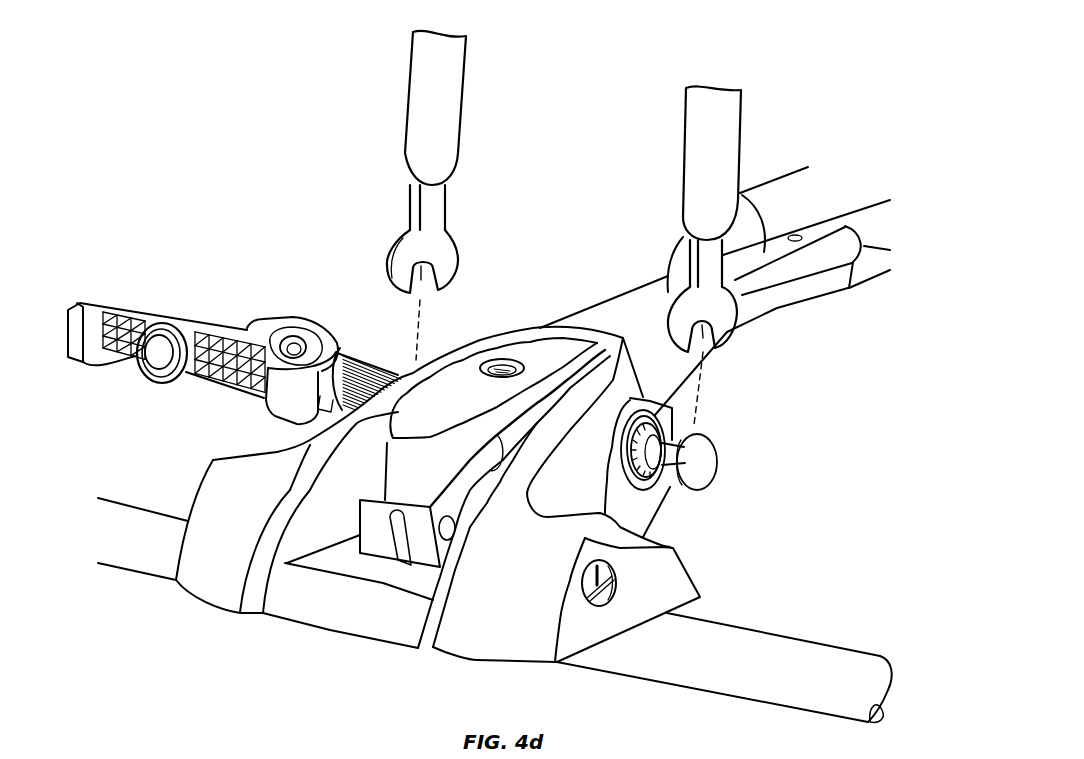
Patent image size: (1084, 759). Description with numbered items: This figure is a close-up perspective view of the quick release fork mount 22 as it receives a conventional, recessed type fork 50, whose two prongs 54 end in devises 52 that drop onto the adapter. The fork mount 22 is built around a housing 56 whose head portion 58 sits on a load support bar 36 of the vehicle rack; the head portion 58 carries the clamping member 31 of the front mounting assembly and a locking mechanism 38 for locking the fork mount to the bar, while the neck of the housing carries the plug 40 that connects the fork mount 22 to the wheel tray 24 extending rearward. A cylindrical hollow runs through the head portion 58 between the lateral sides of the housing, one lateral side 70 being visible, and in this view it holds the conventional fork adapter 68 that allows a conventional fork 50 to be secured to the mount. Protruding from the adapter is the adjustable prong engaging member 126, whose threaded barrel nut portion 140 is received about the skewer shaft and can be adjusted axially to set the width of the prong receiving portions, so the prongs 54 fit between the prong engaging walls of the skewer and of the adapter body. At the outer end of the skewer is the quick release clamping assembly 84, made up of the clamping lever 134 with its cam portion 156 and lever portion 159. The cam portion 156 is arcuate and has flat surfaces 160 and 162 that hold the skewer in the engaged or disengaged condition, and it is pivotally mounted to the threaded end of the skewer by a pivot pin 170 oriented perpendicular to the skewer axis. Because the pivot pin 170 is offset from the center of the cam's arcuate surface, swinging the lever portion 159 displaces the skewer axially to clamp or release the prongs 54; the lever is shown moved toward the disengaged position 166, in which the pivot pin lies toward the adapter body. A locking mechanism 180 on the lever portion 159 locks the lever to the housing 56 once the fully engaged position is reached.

The fork mount 22 is at (358, 270).
The wheel tray 24 is at (806, 174).
The clamping member 31 is at (419, 419).
The load support bar 36 is at (771, 646).
The locking mechanism 38 is at (488, 356).
The plug 40 is at (626, 301).
The conventional fork 50 is at (758, 106).
The devise 52 is at (709, 329).
The prong 54 is at (417, 106).
The housing 56 is at (207, 488).
The head portion 58 is at (267, 636).
The conventional fork adapter 68 is at (761, 462).
The lateral side 70 is at (646, 508).
The quick release clamping assembly 84 is at (165, 289).
The adjustable prong engaging member 126 is at (377, 361).
The clamping lever 134 is at (220, 326).
The threaded barrel nut portion 140 is at (356, 341).
The cam portion 156 is at (360, 304).
The lever portion 159 is at (74, 290).
The flat surface 160 is at (277, 406).
The flat surface 162 is at (299, 323).
The disengaged position 166 is at (776, 408).
The pivot pin 170 is at (291, 340).
The locking mechanism 180 is at (609, 573).